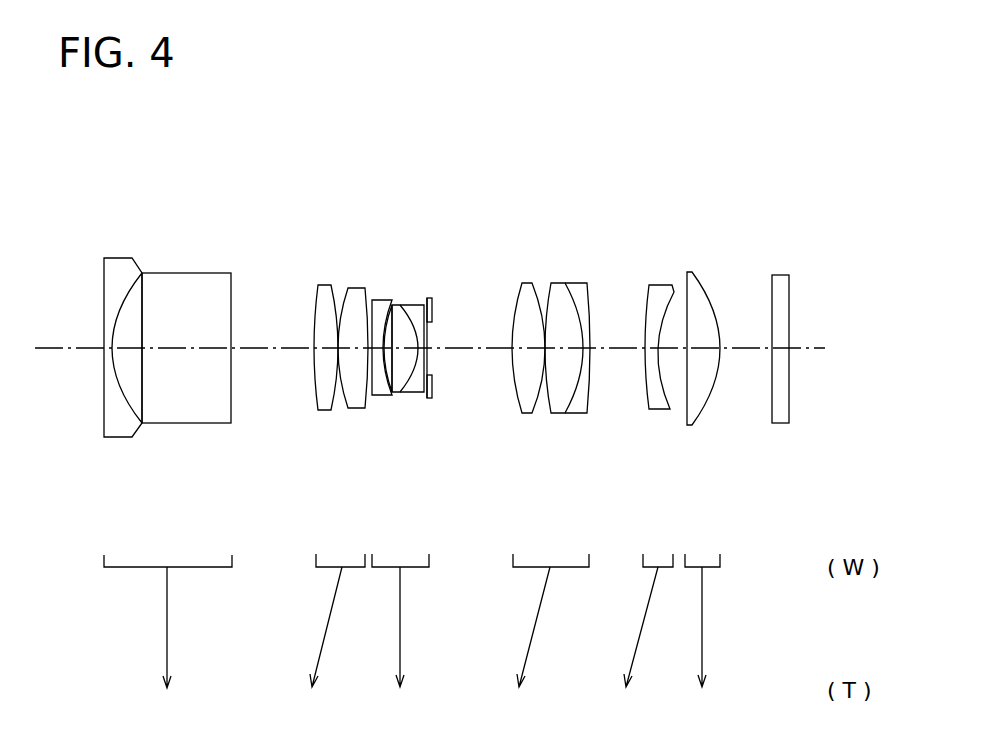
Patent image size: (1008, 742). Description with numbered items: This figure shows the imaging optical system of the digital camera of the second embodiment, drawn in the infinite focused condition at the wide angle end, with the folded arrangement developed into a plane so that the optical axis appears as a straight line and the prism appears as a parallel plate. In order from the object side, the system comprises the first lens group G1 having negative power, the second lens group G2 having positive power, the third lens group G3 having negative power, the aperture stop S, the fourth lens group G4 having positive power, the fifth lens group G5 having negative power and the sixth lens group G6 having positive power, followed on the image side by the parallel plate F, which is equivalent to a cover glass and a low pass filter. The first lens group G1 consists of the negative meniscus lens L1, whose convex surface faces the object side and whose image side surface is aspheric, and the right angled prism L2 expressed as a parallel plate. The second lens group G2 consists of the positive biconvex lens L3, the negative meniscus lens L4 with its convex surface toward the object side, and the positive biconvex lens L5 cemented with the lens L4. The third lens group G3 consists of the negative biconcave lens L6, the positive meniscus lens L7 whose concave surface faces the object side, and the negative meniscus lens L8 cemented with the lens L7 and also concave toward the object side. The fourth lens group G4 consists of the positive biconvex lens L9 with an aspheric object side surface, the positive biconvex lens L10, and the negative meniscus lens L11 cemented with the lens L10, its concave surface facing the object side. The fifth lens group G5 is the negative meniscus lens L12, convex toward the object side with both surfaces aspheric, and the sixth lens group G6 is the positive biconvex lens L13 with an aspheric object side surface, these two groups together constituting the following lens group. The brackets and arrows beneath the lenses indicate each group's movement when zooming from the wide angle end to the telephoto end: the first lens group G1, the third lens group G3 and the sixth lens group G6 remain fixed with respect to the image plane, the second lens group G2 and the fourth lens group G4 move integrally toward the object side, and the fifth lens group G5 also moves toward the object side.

The negative meniscus lens L1 is at (118, 268).
The right angled prism L2 is at (176, 405).
The positive biconvex lens L3 is at (325, 297).
The negative meniscus lens L4 is at (350, 400).
The positive biconvex lens L5 is at (375, 302).
The negative biconcave lens L6 is at (382, 385).
The positive meniscus lens L7 is at (397, 303).
The negative meniscus lens L8 is at (418, 378).
The aperture stop S is at (427, 298).
The positive biconvex lens L9 is at (526, 295).
The positive biconvex lens L10 is at (561, 395).
The negative meniscus lens L11 is at (575, 292).
The negative meniscus lens L12 is at (657, 393).
The positive biconvex lens L13 is at (692, 283).
The parallel plate F is at (780, 413).
The first lens group G1 is at (159, 621).
The second lens group G2 is at (331, 620).
The third lens group G3 is at (409, 620).
The fourth lens group G4 is at (543, 620).
The fifth lens group G5 is at (644, 620).
The sixth lens group G6 is at (712, 620).